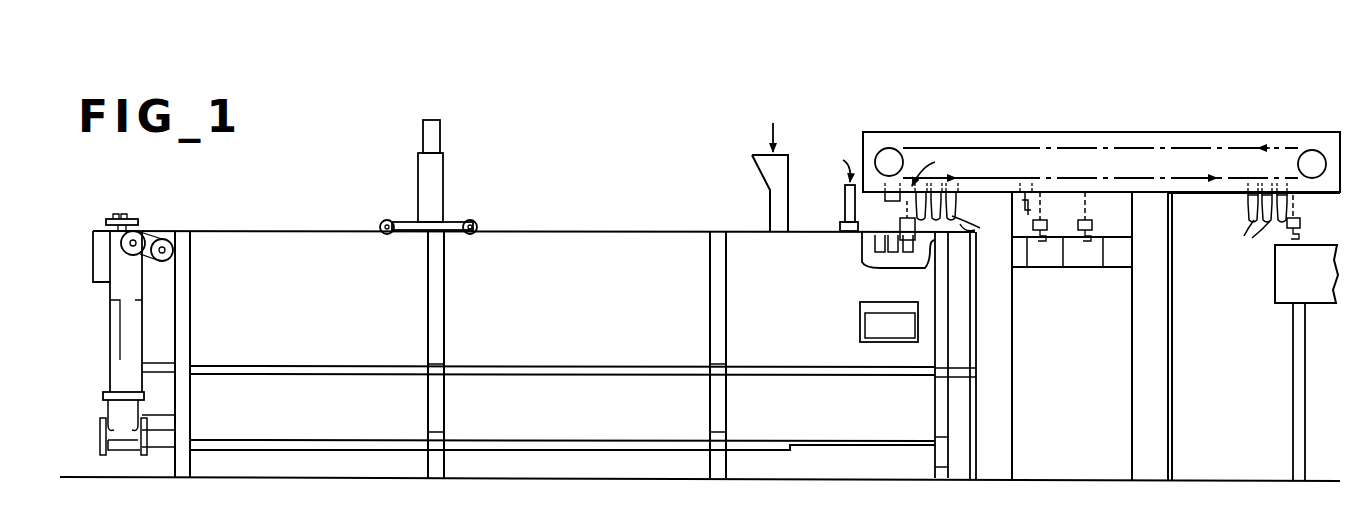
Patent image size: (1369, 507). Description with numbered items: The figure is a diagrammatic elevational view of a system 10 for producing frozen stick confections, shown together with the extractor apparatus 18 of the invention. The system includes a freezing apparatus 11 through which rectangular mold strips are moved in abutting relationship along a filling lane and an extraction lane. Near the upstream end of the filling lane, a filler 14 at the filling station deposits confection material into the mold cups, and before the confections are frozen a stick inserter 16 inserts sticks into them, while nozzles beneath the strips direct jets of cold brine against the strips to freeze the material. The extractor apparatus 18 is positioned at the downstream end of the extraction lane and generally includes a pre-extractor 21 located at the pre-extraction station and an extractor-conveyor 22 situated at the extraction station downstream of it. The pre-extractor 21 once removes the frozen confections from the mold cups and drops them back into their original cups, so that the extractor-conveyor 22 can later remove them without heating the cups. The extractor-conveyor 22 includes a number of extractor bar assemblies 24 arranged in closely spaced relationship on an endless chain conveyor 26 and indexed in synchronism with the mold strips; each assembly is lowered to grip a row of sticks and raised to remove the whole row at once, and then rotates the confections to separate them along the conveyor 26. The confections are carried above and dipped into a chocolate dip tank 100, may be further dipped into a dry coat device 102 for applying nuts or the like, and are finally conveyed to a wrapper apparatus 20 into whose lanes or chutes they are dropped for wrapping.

The system for producing frozen confections 10 is at (245, 190).
The freezing apparatus 11 is at (233, 229).
The filler 14 is at (775, 197).
The stick inserter 16 is at (425, 175).
The extractor apparatus 18 is at (900, 130).
The wrapper apparatus 20 is at (1278, 290).
The pre-extractor 21 is at (845, 214).
The extractor-conveyor 22 is at (1243, 200).
The extractor bar assemblies 24 is at (960, 179).
The endless chain conveyor 26 is at (1032, 147).
The chocolate dip tank 100 is at (1041, 263).
The dry coat device 102 is at (1088, 263).